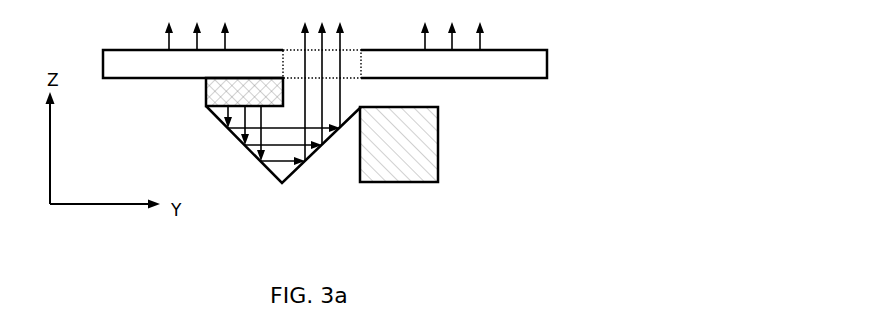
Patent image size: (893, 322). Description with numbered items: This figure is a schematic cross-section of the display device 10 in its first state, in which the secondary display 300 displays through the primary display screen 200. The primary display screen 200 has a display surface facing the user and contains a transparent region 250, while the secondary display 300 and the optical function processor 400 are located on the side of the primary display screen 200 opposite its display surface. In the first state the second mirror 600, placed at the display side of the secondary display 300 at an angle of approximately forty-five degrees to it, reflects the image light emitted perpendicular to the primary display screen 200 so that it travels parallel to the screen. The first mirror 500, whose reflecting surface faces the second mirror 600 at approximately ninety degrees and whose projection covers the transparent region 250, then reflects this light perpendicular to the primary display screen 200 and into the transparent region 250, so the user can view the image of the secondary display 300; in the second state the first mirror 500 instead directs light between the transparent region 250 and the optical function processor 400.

The display device 10 is at (341, 248).
The primary display screen 200 is at (510, 48).
The transparent region 250 is at (352, 58).
The secondary display 300 is at (207, 90).
The optical function processor 400 is at (430, 137).
The first mirror 500 is at (323, 146).
The second mirror 600 is at (218, 121).